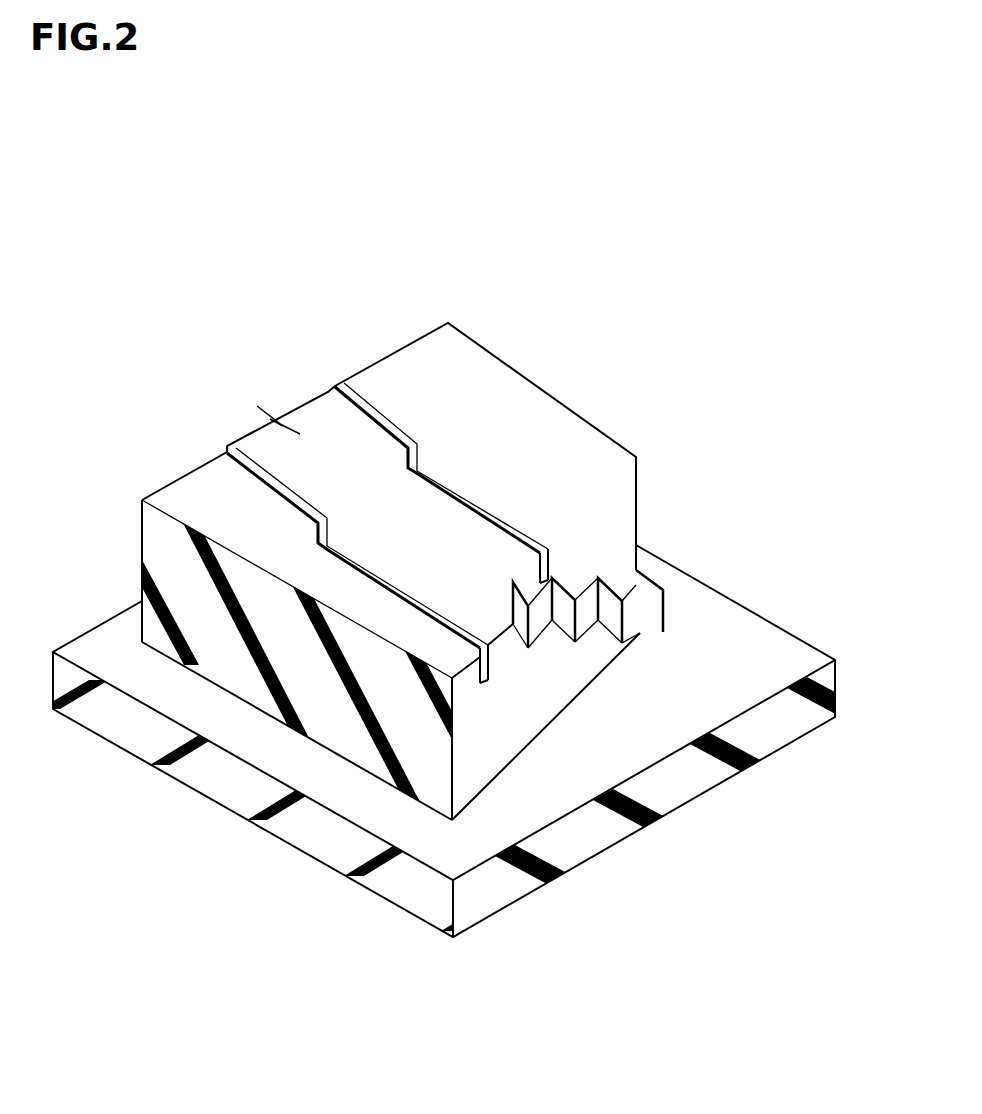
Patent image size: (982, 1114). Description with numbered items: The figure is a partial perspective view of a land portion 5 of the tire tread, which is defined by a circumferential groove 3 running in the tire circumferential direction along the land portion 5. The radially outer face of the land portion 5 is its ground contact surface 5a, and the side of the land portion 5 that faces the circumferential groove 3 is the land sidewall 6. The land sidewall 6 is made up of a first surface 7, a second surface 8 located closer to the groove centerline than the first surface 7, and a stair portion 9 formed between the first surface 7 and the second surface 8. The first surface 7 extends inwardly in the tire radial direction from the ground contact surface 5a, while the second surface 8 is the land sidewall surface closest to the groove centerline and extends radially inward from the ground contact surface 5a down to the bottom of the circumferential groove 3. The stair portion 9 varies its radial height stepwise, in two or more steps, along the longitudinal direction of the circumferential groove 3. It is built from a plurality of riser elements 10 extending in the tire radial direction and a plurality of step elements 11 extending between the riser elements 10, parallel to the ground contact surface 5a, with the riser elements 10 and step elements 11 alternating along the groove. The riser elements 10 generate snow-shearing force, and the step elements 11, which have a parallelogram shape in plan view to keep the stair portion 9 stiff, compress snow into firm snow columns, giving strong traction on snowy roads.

The circumferential groove 3 is at (589, 773).
The land portion 5 is at (128, 545).
The ground contact surface 5a is at (420, 388).
The land sidewall 6 is at (840, 830).
The first surface 7 is at (622, 544).
The second surface 8 is at (571, 667).
The stair portion 9 is at (643, 637).
The riser element 10 is at (570, 600).
The step element 11 is at (535, 610).